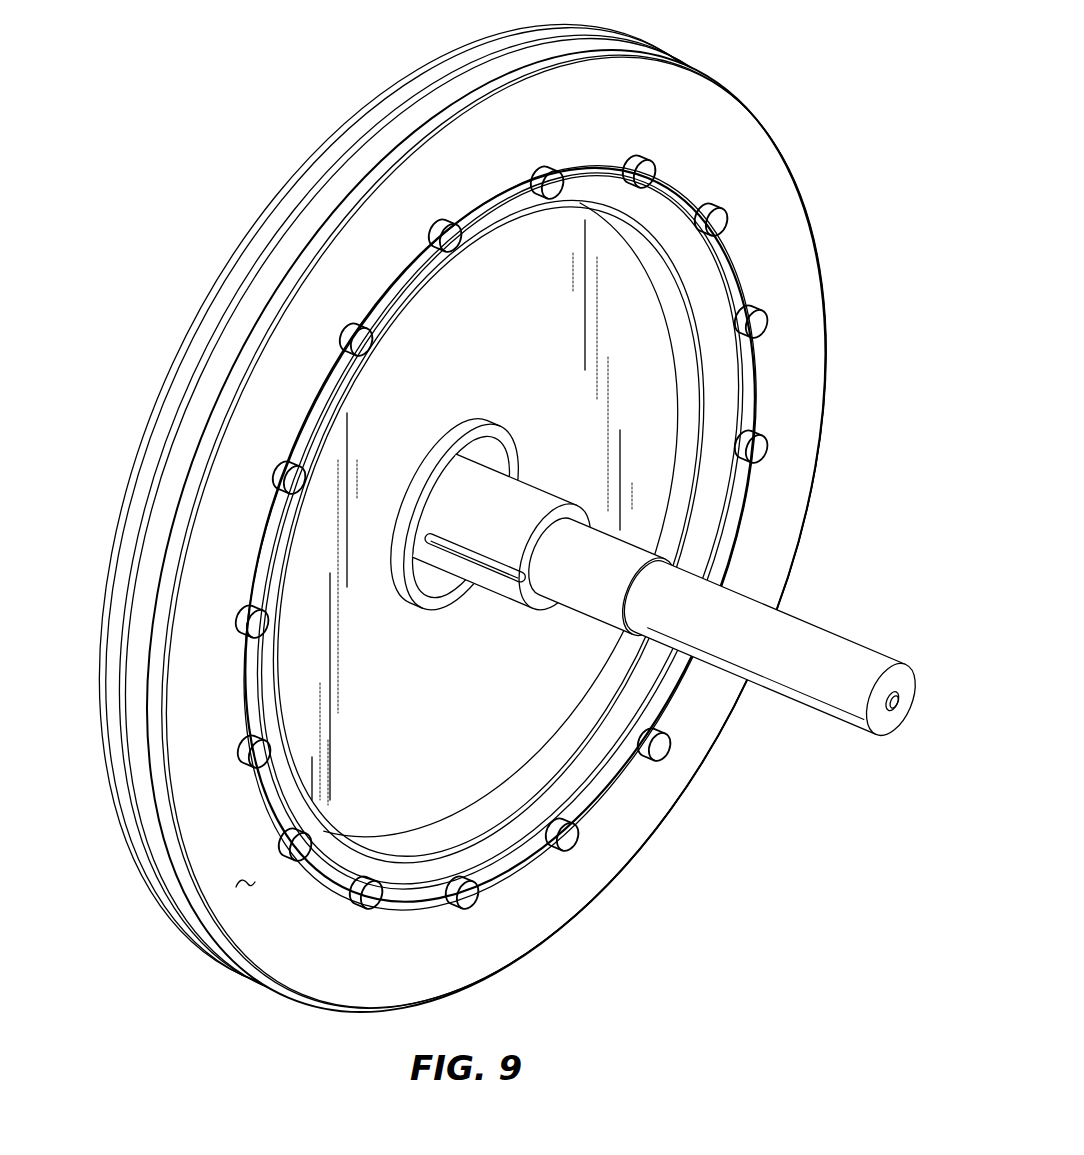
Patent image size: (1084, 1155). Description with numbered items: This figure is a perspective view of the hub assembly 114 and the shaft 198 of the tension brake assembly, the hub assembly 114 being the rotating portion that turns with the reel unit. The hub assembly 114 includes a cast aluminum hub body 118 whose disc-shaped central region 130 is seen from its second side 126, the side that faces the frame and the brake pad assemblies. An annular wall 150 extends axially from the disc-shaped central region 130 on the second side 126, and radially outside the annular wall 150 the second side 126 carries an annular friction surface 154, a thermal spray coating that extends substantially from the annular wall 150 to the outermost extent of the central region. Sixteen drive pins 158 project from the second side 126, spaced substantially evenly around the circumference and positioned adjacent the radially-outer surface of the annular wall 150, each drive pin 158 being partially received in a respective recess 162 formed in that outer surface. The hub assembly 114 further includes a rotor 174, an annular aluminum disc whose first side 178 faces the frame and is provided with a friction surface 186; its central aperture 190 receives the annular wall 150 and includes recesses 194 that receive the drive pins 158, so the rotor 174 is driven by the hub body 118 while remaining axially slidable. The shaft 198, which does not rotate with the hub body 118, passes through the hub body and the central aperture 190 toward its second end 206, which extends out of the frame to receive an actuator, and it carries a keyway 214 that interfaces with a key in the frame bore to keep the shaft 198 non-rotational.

The hub assembly 114 is at (750, 71).
The hub body 118 is at (135, 430).
The second side 126 is at (830, 232).
The disc-shaped central region 130 is at (336, 133).
The annular wall 150 is at (748, 290).
The annular friction surface 154 is at (126, 740).
The drive pins 158 is at (648, 178).
The recesses 162 is at (752, 440).
The rotor 174 is at (162, 773).
The first side 178 is at (588, 870).
The friction surface 186 is at (248, 886).
The central aperture 190 is at (263, 797).
The recesses 194 is at (346, 322).
The shaft 198 is at (803, 637).
The second end 206 is at (907, 673).
The keyway 214 is at (490, 580).